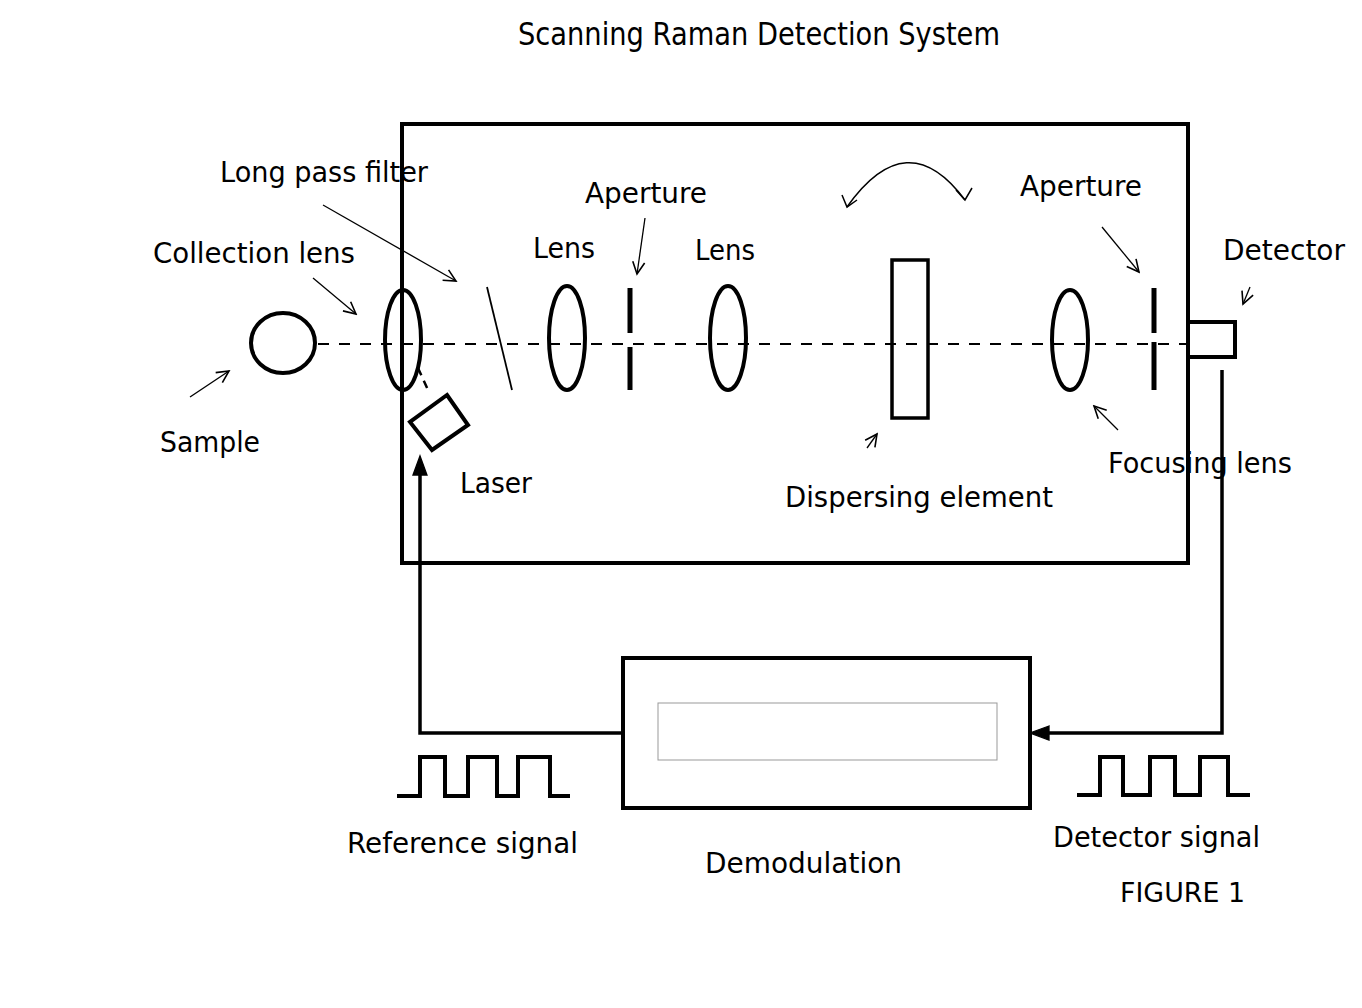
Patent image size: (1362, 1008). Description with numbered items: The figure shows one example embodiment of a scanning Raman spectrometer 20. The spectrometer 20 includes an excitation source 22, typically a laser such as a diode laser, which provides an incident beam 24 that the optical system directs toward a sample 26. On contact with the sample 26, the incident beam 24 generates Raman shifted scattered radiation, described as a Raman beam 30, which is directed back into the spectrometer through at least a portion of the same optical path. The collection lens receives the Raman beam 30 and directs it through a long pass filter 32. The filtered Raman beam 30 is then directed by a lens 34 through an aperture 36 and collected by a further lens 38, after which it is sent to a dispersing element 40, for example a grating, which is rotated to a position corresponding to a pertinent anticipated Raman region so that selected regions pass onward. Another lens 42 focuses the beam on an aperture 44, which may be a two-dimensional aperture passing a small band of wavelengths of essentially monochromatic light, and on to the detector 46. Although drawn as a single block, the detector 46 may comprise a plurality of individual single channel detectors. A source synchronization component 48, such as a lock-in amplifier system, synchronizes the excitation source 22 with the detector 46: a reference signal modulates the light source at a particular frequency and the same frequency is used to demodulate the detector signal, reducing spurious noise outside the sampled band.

The Raman spectrometer 20 is at (367, 76).
The excitation source 22 is at (466, 428).
The incident beam 24 is at (432, 383).
The sample 26 is at (293, 373).
The Raman beam 30 is at (812, 345).
The long pass filter 32 is at (487, 287).
The lens 34 is at (570, 390).
The aperture 36 is at (633, 390).
The lens 38 is at (730, 391).
The dispersing element 40 is at (928, 403).
The lens 42 is at (1063, 290).
The aperture 44 is at (1154, 390).
The detector 46 is at (1236, 327).
The source synchronization component 48 is at (801, 658).